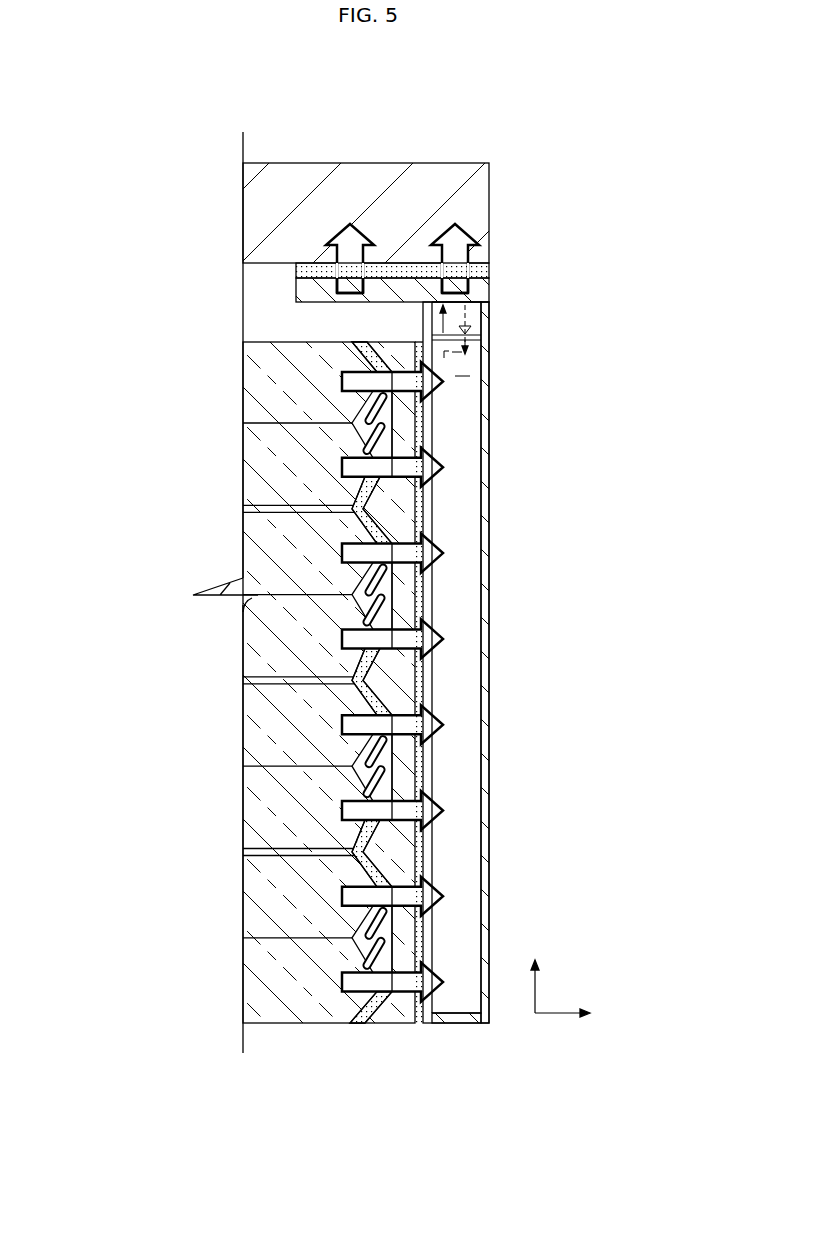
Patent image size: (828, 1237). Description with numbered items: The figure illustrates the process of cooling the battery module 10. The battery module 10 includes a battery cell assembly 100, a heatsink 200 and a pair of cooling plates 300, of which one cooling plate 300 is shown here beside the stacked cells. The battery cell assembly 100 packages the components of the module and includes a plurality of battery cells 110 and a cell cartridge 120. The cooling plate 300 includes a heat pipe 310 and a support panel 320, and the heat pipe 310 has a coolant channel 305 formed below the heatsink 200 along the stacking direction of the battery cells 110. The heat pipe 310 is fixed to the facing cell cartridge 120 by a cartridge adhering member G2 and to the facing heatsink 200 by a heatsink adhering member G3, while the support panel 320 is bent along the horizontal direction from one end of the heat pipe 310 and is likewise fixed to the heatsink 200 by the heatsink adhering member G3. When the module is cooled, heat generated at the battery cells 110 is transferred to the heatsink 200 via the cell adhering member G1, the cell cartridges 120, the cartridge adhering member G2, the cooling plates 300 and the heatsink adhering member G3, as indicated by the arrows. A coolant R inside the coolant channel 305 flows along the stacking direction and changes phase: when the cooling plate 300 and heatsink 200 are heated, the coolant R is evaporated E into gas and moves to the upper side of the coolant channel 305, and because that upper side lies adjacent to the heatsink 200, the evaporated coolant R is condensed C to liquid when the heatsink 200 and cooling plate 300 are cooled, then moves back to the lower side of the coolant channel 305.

The battery module 10 is at (187, 122).
The battery cell assembly 100 is at (207, 532).
The battery cell 110 is at (258, 387).
The cell cartridge 120 is at (392, 1023).
The heatsink 200 is at (494, 184).
The cooling plate 300 is at (502, 482).
The coolant channel 305 is at (434, 597).
The heat pipe 310 is at (487, 545).
The support panel 320 is at (305, 292).
The cell adhering member G1 is at (367, 1023).
The cartridge adhering member G2 is at (420, 1023).
The heatsink adhering member G3 is at (485, 270).
The condensation C is at (465, 320).
The evaporation E is at (462, 330).
The coolant R is at (465, 400).